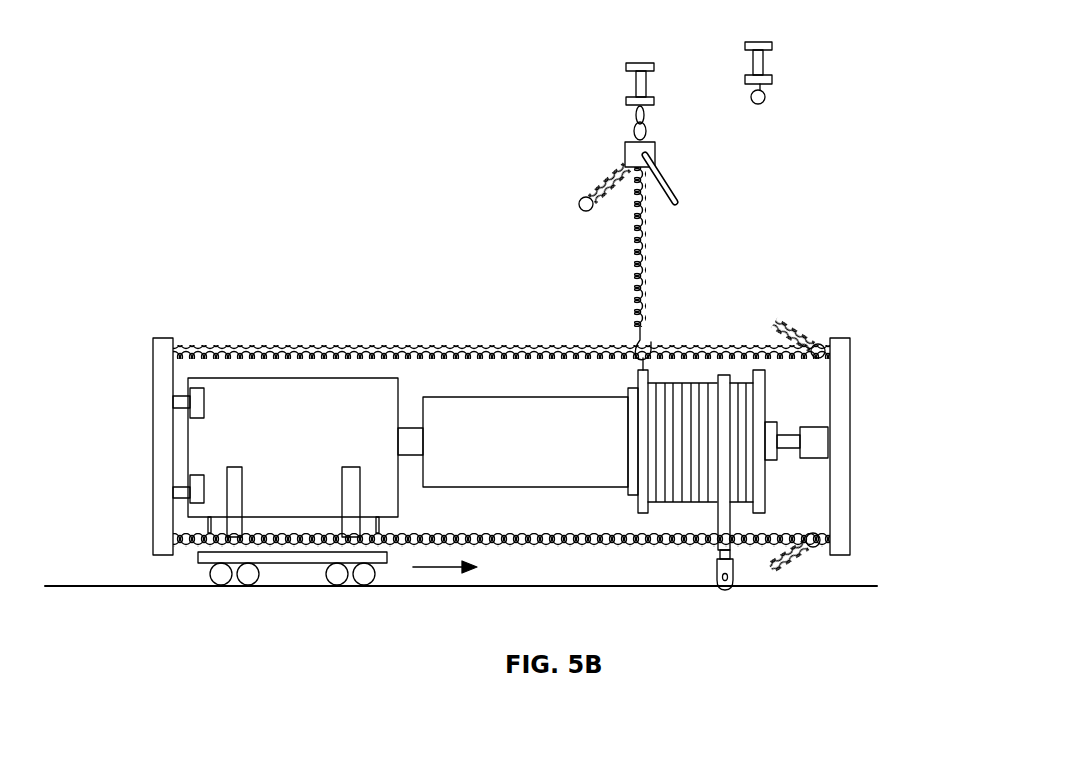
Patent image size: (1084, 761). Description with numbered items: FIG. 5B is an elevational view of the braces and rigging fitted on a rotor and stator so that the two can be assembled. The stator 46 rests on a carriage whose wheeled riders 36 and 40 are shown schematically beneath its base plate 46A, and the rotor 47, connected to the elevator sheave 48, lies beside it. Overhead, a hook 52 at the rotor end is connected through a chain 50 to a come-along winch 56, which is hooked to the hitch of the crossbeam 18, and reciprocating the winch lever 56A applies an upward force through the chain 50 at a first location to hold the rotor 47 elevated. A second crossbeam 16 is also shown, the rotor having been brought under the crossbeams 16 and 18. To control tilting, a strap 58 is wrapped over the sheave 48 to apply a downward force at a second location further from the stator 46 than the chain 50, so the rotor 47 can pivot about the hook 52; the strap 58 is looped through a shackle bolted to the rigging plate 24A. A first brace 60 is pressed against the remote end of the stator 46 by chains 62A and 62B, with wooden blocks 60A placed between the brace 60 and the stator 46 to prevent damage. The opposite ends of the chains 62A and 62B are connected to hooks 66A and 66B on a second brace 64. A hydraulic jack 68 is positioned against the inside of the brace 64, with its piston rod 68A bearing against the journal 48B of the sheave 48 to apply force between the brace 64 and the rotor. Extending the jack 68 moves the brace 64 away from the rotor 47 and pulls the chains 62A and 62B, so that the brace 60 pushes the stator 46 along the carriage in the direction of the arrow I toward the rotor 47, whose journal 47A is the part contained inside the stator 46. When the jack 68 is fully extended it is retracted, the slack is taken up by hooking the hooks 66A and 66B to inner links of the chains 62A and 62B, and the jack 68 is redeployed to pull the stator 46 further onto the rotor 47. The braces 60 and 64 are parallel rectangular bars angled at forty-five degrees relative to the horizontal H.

The crossbeam 16 is at (745, 47).
The crossbeam 18 is at (626, 68).
The rigging plate 24A is at (718, 571).
The rider 36 is at (198, 574).
The rider 40 is at (388, 573).
The stator 46 is at (283, 378).
The base plate 46A is at (197, 557).
The rotor 47 is at (478, 397).
The journal 47A is at (408, 428).
The elevator sheave 48 is at (675, 383).
The journal 48B is at (771, 417).
The chain 50 is at (636, 262).
The hook 52 is at (628, 340).
The come-along winch 56 is at (625, 155).
The winch lever 56A is at (668, 183).
The strap 58 is at (710, 513).
The first brace 60 is at (153, 375).
The wooden blocks 60A is at (184, 408).
The chain 62A is at (470, 347).
The chain 62B is at (498, 533).
The second brace 64 is at (840, 557).
The hook 66A is at (850, 352).
The hook 66B is at (850, 540).
The hydraulic jack 68 is at (826, 460).
The piston rod 68A is at (795, 433).
The horizontal ground H is at (66, 580).
The arrow I is at (438, 567).